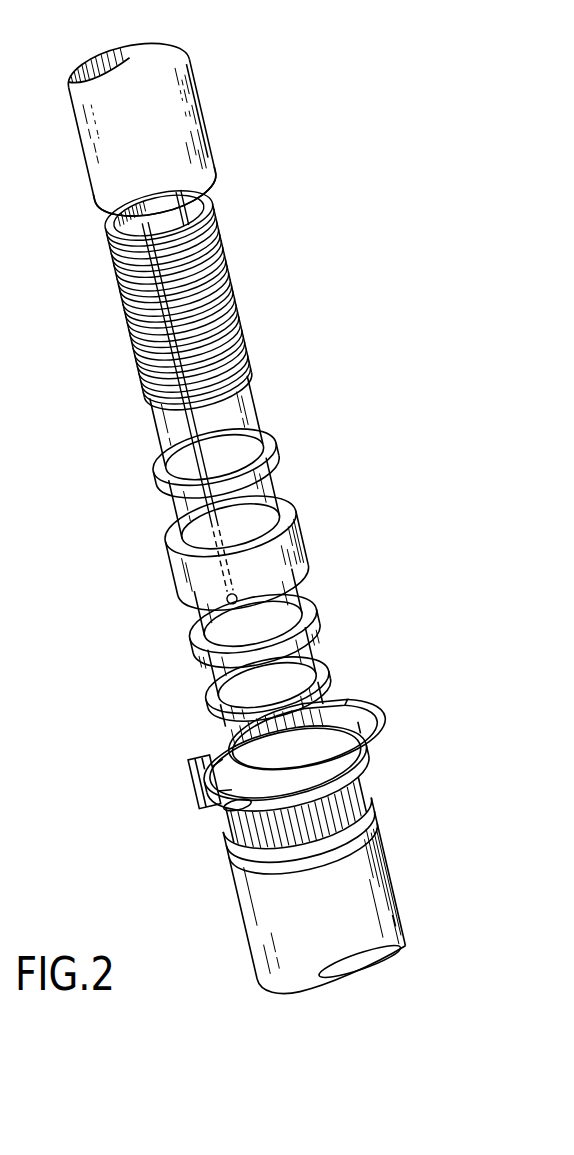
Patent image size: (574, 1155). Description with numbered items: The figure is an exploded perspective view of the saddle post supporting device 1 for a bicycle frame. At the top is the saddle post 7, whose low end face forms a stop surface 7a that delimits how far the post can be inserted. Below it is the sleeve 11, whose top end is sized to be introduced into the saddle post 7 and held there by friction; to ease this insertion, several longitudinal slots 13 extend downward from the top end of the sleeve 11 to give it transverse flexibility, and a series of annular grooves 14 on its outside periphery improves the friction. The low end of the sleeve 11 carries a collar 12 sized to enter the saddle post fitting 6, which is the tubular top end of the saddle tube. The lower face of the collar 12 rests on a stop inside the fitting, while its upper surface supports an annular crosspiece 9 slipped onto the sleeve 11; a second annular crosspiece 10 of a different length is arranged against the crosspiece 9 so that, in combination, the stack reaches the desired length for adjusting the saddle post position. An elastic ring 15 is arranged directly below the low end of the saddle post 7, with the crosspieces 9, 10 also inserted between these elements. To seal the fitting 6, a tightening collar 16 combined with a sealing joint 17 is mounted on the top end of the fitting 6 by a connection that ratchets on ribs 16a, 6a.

The saddle post supporting device 1 is at (128, 500).
The saddle post fitting 6 is at (255, 910).
The rib 6a is at (366, 813).
The saddle post 7 is at (180, 100).
The stop surface 7a is at (102, 203).
The crosspiece 9 is at (322, 640).
The second crosspiece 10 is at (283, 558).
The sleeve 11 is at (243, 412).
The collar 12 is at (323, 688).
The longitudinal slots 13 is at (205, 226).
The annular grooves 14 is at (206, 300).
The elastic ring 15 is at (275, 462).
The tightening collar 16 is at (207, 766).
The rib 16a is at (322, 732).
The sealing joint 17 is at (202, 728).